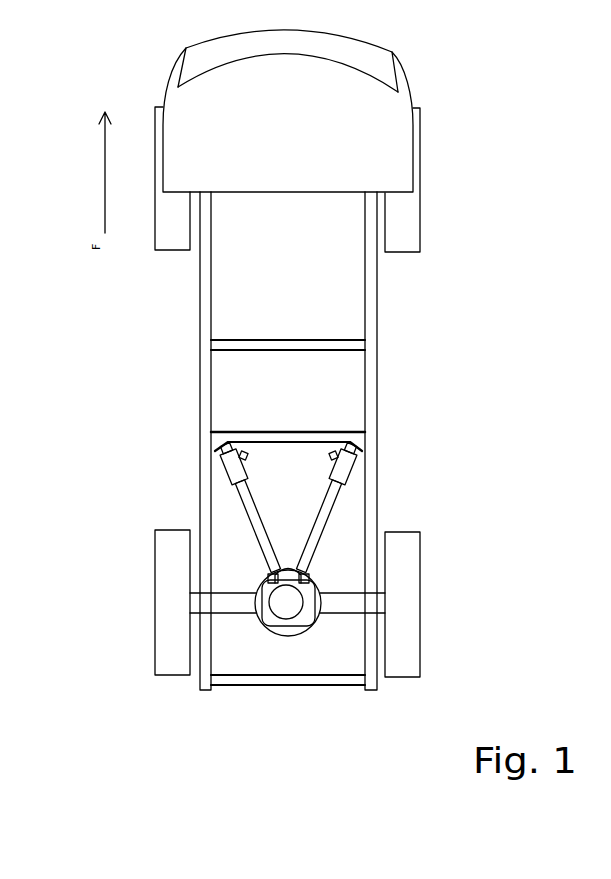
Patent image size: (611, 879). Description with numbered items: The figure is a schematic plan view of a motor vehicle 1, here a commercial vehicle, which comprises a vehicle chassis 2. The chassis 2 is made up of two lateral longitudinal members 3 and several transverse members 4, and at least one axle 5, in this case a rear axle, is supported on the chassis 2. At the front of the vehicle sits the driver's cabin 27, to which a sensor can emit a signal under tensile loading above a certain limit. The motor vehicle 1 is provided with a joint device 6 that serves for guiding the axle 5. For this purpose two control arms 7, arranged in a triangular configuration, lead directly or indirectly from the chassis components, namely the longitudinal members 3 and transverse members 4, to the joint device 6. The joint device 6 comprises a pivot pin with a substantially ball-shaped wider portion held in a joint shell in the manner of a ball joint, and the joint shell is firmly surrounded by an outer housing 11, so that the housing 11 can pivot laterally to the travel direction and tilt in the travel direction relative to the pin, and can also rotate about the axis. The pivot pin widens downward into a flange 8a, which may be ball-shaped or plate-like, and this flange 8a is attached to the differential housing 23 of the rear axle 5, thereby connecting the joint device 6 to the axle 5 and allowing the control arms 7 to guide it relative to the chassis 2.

The motor vehicle 1 is at (452, 132).
The driver's cabin 27 is at (323, 137).
The vehicle chassis 2 is at (298, 486).
The longitudinal members 3 is at (368, 290).
The transverse members 4 is at (305, 430).
The control arms 7 is at (263, 532).
The axle 5 is at (332, 603).
The joint device 6 is at (212, 609).
The flange 8a is at (262, 627).
The differential housing 23 is at (292, 628).
The outer housing 11 is at (292, 608).